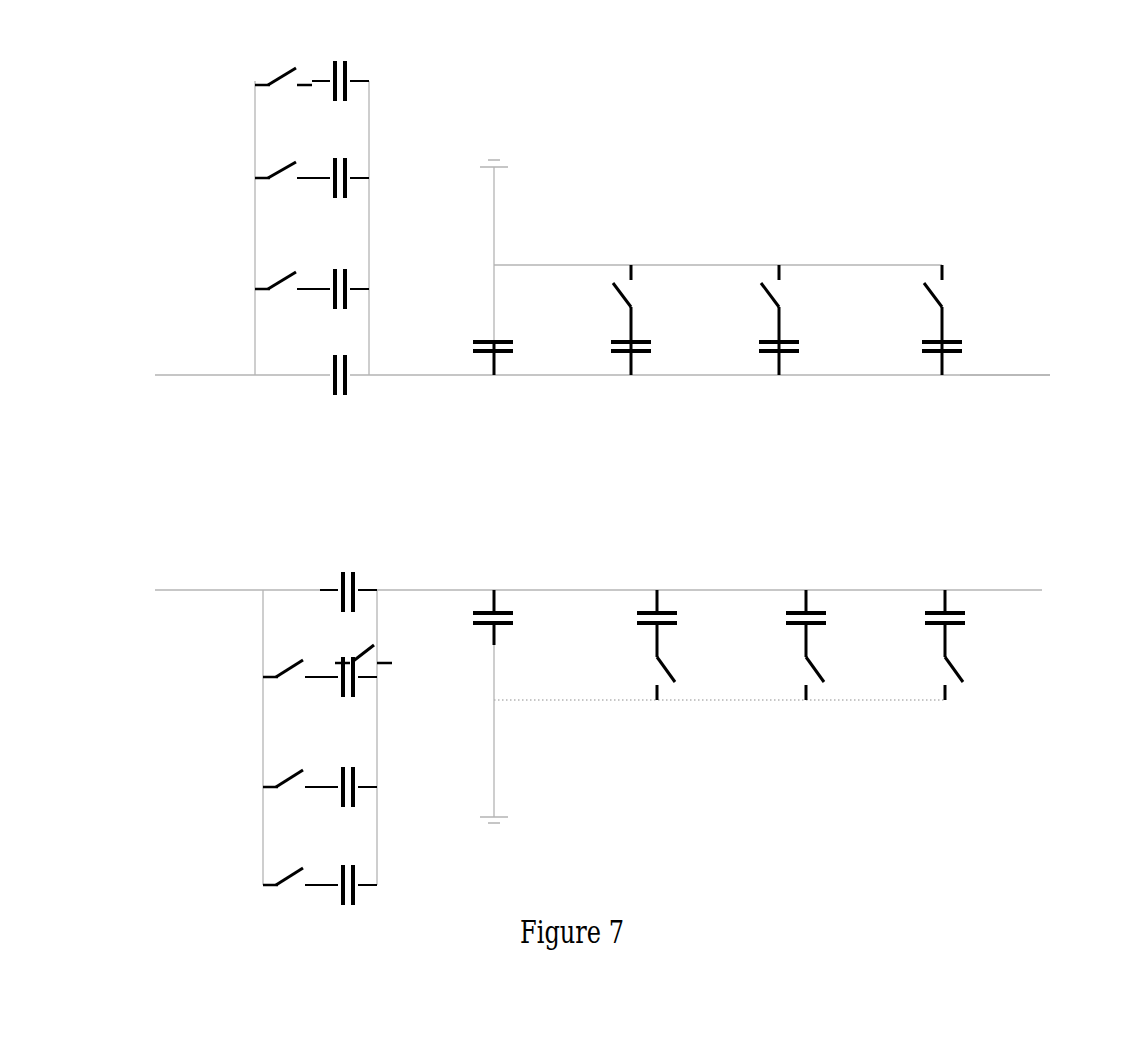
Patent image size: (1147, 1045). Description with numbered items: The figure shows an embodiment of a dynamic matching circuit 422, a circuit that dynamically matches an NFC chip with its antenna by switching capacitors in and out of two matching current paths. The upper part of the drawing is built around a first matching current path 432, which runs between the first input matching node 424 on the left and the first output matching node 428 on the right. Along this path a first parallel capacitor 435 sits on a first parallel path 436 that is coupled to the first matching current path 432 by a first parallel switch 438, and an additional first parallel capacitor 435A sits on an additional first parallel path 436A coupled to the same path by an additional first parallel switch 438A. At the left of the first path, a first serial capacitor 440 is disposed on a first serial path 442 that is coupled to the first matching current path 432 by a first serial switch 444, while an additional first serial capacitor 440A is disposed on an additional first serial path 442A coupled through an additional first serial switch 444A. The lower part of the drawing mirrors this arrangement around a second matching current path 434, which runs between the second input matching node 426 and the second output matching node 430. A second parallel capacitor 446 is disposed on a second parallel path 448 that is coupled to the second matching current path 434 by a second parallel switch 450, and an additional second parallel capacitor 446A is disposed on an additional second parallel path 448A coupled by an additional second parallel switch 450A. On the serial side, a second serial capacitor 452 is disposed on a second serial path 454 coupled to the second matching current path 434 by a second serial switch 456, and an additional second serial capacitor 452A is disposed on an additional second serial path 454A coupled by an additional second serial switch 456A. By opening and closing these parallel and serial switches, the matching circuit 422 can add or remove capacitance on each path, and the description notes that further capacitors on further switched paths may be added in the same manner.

The matching circuit 422 is at (1052, 147).
The first input matching node 424 is at (602, 362).
The second input matching node 426 is at (246, 575).
The first output matching node 428 is at (1005, 361).
The second output matching node 430 is at (700, 578).
The first matching current path 432 is at (602, 375).
The second matching current path 434 is at (633, 585).
The first parallel capacitor 435 is at (960, 337).
The additional first parallel capacitor 435A is at (797, 343).
The first parallel path 436 is at (958, 274).
The additional first parallel path 436A is at (798, 280).
The first parallel switch 438 is at (950, 307).
The additional first parallel switch 438A is at (790, 315).
The first serial capacitor 440 is at (380, 57).
The additional first serial capacitor 440A is at (378, 154).
The first serial path 442 is at (255, 92).
The additional first serial path 442A is at (248, 195).
The first serial switch 444 is at (330, 53).
The additional first serial switch 444A is at (303, 170).
The second parallel capacitor 446 is at (975, 620).
The additional second parallel capacitor 446A is at (825, 620).
The second parallel path 448 is at (960, 705).
The additional second parallel path 448A is at (806, 693).
The second parallel switch 450 is at (972, 683).
The additional second parallel switch 450A is at (830, 668).
The second serial capacitor 452 is at (315, 905).
The additional second serial capacitor 452A is at (335, 792).
The second serial path 454 is at (265, 884).
The additional second serial path 454A is at (262, 784).
The second serial switch 456 is at (320, 867).
The additional second serial switch 456A is at (313, 768).